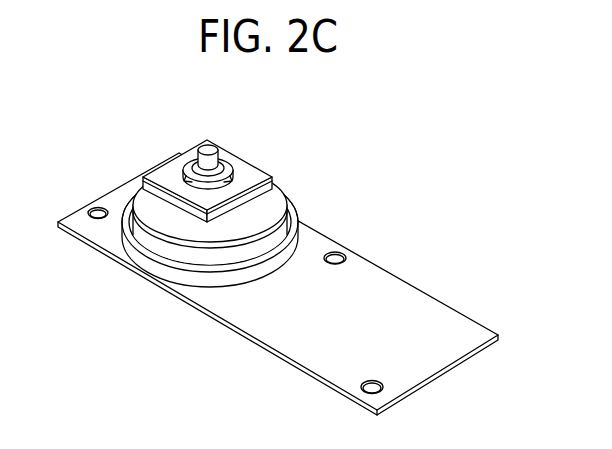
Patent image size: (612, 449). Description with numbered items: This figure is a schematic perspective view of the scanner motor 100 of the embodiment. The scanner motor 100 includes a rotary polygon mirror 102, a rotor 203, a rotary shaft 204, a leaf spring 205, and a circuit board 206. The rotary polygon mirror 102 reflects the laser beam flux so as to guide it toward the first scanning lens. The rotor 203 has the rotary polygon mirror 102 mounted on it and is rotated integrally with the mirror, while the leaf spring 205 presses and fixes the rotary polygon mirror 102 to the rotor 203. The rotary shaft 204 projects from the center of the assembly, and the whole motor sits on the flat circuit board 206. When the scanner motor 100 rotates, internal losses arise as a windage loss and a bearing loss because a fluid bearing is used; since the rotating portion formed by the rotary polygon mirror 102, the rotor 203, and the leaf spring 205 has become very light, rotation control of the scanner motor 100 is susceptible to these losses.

The scanner motor 100 is at (278, 242).
The rotary polygon mirror 102 is at (247, 167).
The rotor 203 is at (180, 247).
The rotary shaft 204 is at (208, 146).
The leaf spring 205 is at (180, 172).
The circuit board 206 is at (377, 307).